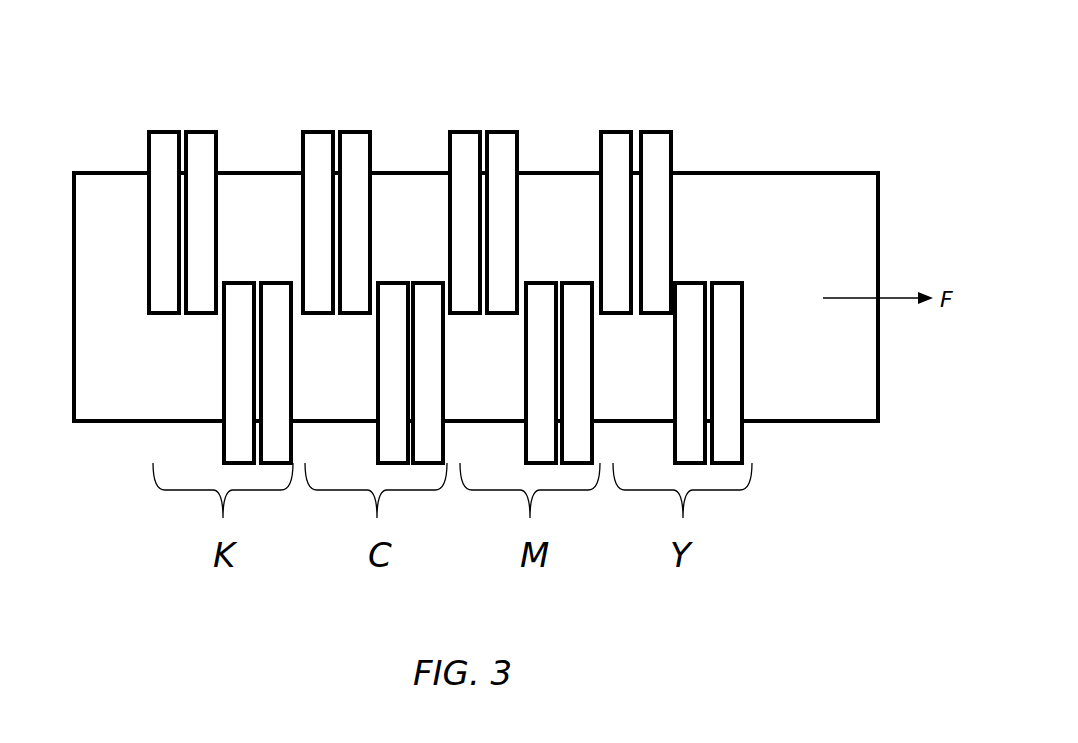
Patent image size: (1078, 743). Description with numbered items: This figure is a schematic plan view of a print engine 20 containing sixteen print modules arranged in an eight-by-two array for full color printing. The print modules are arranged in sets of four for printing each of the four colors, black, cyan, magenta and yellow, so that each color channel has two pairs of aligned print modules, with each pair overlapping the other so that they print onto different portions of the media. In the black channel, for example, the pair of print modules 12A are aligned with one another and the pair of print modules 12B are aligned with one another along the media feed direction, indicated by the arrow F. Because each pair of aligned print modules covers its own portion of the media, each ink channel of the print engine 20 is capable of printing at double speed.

The print engine 20 is at (797, 81).
The pair of aligned print modules 12A is at (162, 164).
The pair of aligned print modules 12B is at (234, 318).